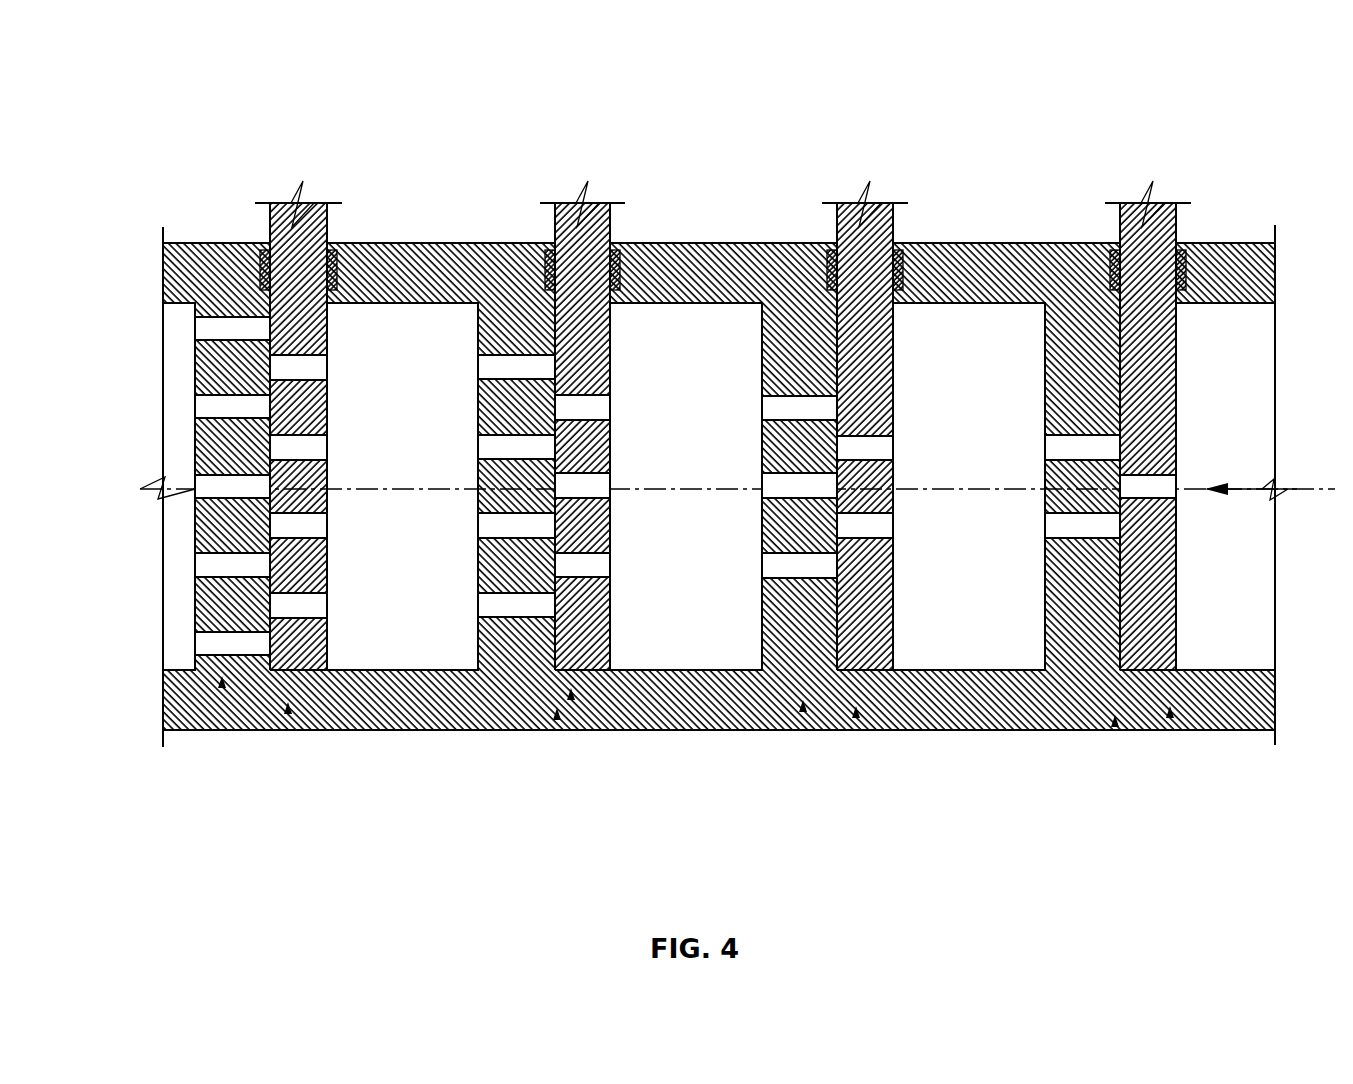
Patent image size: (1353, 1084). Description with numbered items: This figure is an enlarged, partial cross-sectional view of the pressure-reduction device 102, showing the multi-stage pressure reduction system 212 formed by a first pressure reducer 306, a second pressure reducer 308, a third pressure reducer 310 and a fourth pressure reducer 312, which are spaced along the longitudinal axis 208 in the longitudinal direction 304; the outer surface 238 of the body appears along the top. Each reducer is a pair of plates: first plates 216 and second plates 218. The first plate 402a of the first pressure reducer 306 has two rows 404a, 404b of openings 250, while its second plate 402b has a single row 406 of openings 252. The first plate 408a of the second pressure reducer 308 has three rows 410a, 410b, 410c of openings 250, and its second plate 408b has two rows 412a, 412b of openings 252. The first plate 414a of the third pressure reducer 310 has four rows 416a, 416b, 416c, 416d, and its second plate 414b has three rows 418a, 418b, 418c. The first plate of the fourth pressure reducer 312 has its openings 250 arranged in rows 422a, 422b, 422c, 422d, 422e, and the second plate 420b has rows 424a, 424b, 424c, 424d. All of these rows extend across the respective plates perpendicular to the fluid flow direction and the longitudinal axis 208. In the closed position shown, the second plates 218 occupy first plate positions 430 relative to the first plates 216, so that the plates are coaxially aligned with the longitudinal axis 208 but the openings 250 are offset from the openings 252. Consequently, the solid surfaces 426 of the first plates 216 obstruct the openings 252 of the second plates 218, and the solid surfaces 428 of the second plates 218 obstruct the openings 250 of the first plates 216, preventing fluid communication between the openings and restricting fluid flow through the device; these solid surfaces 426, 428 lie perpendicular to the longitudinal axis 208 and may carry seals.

The pressure-reduction device 102 is at (264, 77).
The multi-stage pressure reduction system 212 is at (300, 126).
The first plates 216 is at (719, 450).
The second plates 218 is at (316, 212).
The outer surface 238 is at (1227, 243).
The longitudinal axis 208 is at (1335, 486).
The longitudinal direction 304 is at (1263, 490).
The fourth pressure reducer 312 is at (288, 714).
The third pressure reducer 310 is at (557, 722).
The second pressure reducer 308 is at (856, 718).
The first pressure reducer 306 is at (1115, 727).
The openings 250 is at (213, 543).
The openings 252 is at (885, 445).
The solid surfaces 426 is at (212, 357).
The solid surfaces 428 is at (305, 402).
The first plate positions 430 is at (222, 688).
The first plate 402a is at (1107, 653).
The second plate 402b is at (1165, 620).
The row 404a is at (1070, 445).
The row 404b is at (1068, 545).
The row 406 is at (1178, 478).
The first plate 408a is at (805, 623).
The second plate 408b is at (875, 657).
The row 410a is at (782, 410).
The row 410b is at (782, 490).
The row 410c is at (790, 570).
The row 412a is at (885, 455).
The row 412b is at (885, 540).
The first plate 414a is at (482, 657).
The second plate 414b is at (612, 660).
The row 416a is at (492, 360).
The row 416b is at (505, 450).
The row 416c is at (500, 530).
The row 416d is at (498, 610).
The row 418a is at (600, 405).
The row 418b is at (600, 485).
The row 418c is at (600, 565).
The second plate 420b is at (232, 660).
The row 422a is at (205, 323).
The row 422b is at (205, 405).
The row 422c is at (210, 495).
The row 422d is at (212, 568).
The row 422e is at (215, 643).
The row 424a is at (300, 370).
The row 424b is at (300, 447).
The row 424c is at (300, 528).
The row 424d is at (300, 607).